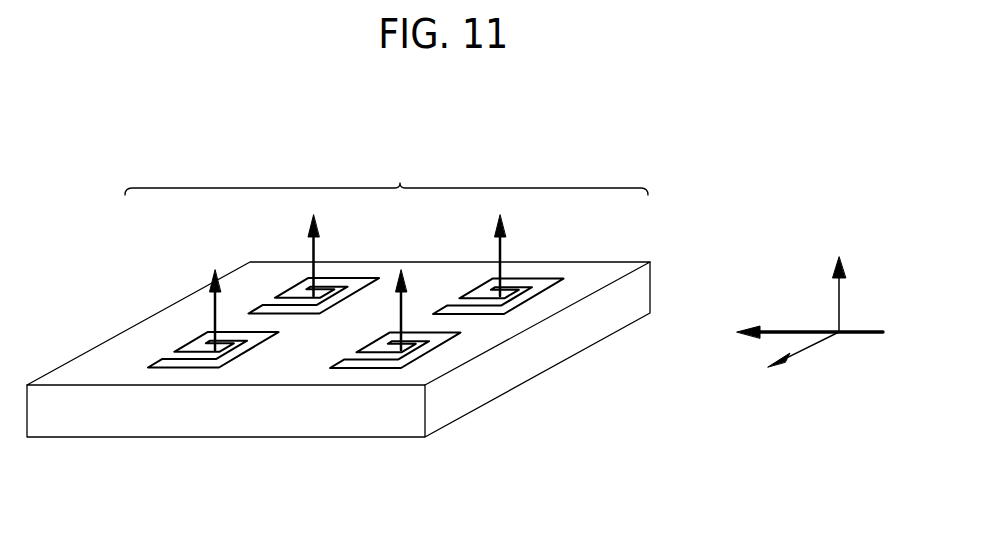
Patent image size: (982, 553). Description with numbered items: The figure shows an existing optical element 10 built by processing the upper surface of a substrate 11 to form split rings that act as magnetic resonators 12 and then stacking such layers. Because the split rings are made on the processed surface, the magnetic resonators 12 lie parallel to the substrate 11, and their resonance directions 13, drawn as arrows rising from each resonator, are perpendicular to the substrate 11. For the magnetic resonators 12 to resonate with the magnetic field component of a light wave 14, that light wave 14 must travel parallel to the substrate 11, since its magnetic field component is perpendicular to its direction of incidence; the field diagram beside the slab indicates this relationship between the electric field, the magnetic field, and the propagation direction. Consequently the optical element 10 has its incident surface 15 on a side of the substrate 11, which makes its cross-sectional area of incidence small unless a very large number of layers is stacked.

The optical element 10 is at (400, 183).
The substrate 11 is at (172, 320).
The magnetic resonators 12 is at (540, 295).
The resonance directions 13 is at (510, 250).
The light wave 14 is at (867, 335).
The incident surface 15 is at (490, 377).